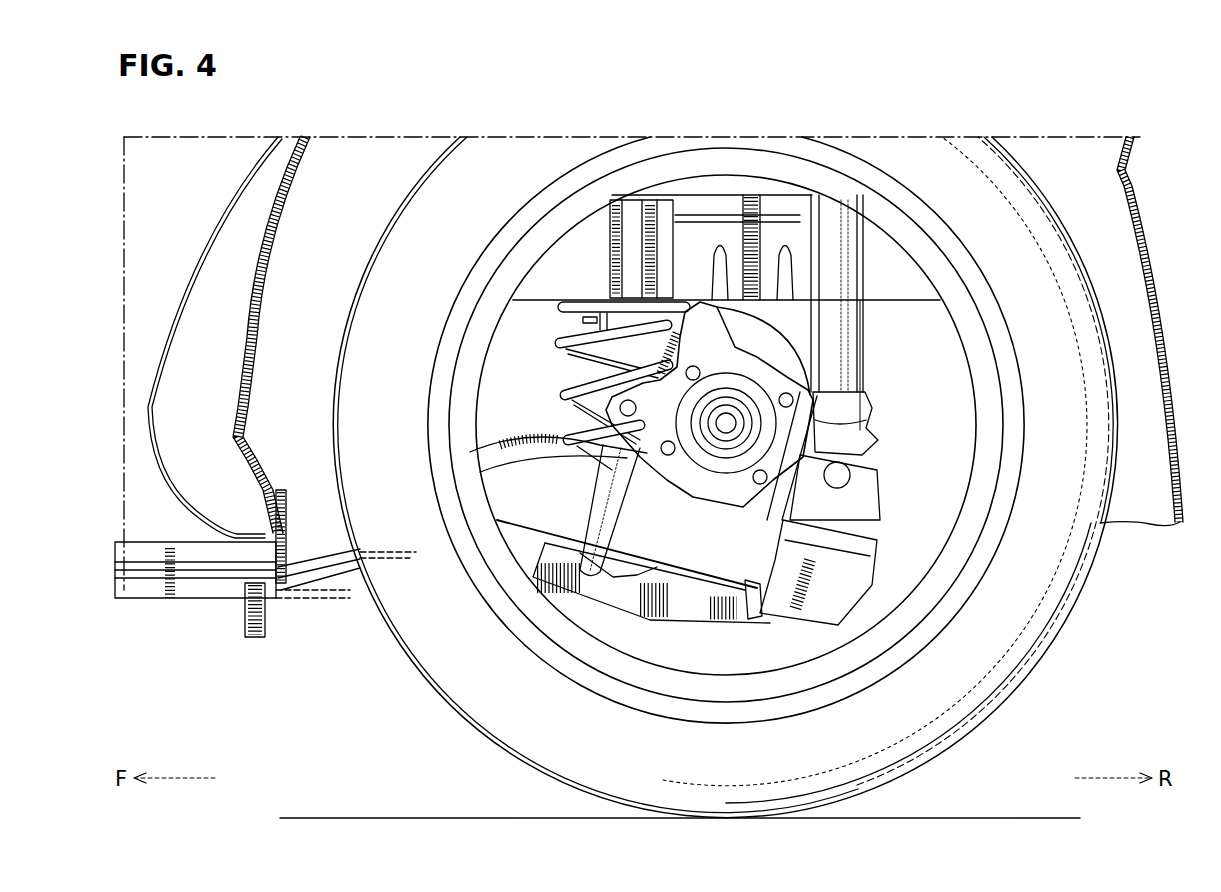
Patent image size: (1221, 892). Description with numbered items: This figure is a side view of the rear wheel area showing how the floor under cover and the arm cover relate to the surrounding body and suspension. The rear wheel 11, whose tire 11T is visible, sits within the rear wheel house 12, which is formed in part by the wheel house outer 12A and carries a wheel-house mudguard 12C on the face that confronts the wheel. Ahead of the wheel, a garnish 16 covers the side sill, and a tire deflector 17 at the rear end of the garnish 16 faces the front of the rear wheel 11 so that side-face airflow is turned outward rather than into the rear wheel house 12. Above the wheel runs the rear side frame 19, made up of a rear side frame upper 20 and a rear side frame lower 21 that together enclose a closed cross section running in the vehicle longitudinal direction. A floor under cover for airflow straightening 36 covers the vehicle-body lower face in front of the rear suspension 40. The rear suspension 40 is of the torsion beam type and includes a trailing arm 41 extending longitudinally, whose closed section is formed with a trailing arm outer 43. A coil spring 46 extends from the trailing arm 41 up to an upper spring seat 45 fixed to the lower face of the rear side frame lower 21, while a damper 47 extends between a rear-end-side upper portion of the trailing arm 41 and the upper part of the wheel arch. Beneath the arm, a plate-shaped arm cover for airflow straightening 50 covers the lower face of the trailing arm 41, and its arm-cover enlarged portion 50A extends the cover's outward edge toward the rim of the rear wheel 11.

The rear wheel 11 is at (1062, 212).
The tire 11T is at (1084, 568).
The rear wheel house 12 is at (670, 337).
The wheel house outer 12A is at (198, 262).
The wheel-house mudguard 12C is at (1150, 228).
The garnish 16 is at (140, 550).
The tire deflector 17 is at (280, 512).
The rear side frame 19 is at (758, 192).
The rear side frame upper 20 is at (707, 194).
The rear side frame lower 21 is at (872, 302).
The floor under cover for airflow straightening 36 is at (306, 598).
The rear suspension 40 is at (876, 580).
The trailing arm 41 is at (515, 430).
The trailing arm outer 43 is at (840, 600).
The upper spring seat 45 is at (562, 308).
The coil spring 46 is at (585, 395).
The damper 47 is at (845, 352).
The arm cover for airflow straightening 50 is at (648, 622).
The arm-cover enlarged portion 50A is at (728, 616).